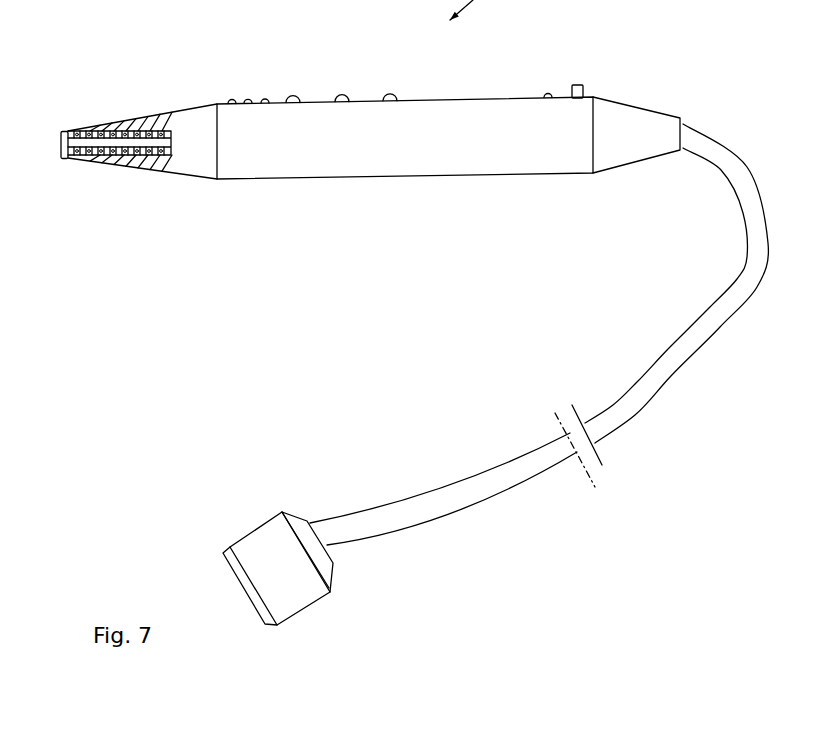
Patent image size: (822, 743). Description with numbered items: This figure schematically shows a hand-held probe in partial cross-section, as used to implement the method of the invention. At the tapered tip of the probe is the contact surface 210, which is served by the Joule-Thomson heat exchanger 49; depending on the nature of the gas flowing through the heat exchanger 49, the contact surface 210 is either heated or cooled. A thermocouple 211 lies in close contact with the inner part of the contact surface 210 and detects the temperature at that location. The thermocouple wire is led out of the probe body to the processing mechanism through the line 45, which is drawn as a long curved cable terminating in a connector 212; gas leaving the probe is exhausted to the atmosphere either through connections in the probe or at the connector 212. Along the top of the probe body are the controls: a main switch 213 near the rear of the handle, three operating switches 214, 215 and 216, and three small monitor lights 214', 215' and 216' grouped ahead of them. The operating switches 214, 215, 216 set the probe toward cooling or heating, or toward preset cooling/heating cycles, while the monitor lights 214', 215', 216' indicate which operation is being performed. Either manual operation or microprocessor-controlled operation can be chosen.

The Joule-Thomson heat exchanger 49 is at (117, 172).
The contact surface 210 is at (55, 145).
The thermocouple 211 is at (77, 122).
The connector 212 is at (310, 600).
The main switch 213 is at (578, 85).
The operating switch 214 is at (414, 71).
The operating switch 215 is at (360, 66).
The operating switch 216 is at (313, 71).
The monitor light 214' is at (277, 64).
The monitor light 215' is at (230, 67).
The monitor light 216' is at (195, 65).
The line 45 is at (517, 478).